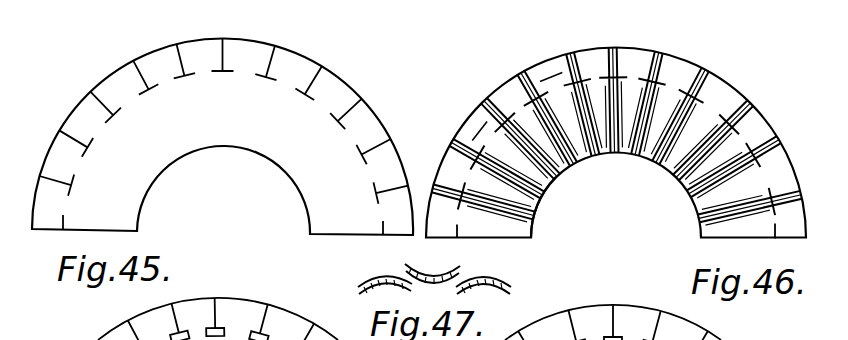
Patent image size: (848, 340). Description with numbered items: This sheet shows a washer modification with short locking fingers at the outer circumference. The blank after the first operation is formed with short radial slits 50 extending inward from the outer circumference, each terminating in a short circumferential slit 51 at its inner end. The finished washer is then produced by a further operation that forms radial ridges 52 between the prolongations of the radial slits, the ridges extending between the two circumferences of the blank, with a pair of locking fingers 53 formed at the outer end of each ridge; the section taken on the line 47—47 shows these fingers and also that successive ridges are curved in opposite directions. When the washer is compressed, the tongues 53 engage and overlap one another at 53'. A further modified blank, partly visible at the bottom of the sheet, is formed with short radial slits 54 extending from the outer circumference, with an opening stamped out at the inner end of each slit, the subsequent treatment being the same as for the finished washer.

In FIG. 46, the section line 47 is at (457, 163).
In FIG. 45, the short radial slits 50 is at (272, 60).
In FIG. 45, the short circumferential slit 51 is at (191, 75).
In FIG. 46, the radial ridges 52 is at (540, 184).
In FIG. 46, the locking fingers 53 is at (530, 105).
In FIG. 47, the locking fingers 53 is at (499, 294).
In FIG. 47, the overlap of tongues 53' is at (409, 272).
In FIG. 45, the short radial slits 54 is at (264, 310).